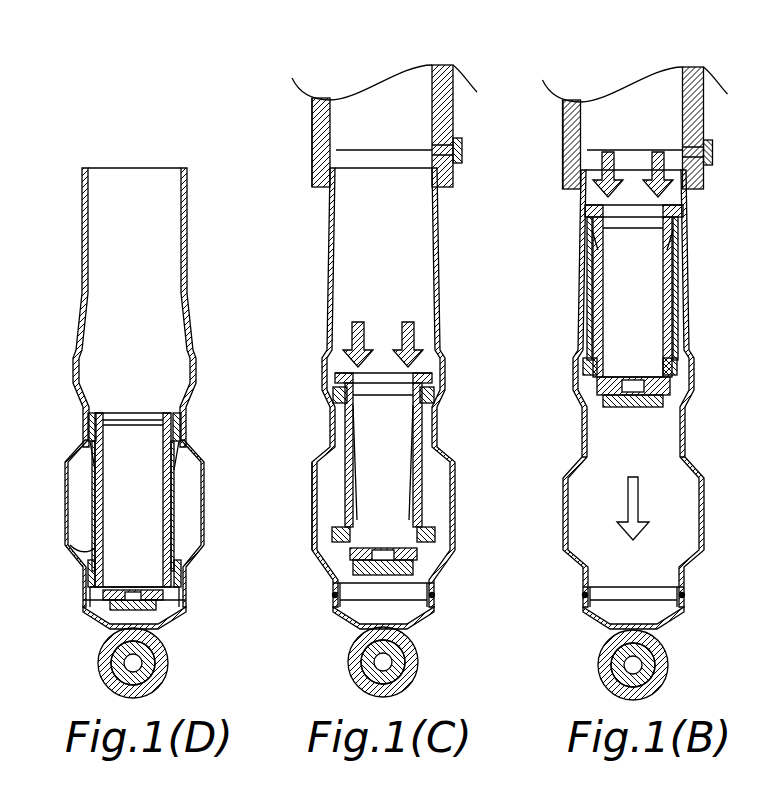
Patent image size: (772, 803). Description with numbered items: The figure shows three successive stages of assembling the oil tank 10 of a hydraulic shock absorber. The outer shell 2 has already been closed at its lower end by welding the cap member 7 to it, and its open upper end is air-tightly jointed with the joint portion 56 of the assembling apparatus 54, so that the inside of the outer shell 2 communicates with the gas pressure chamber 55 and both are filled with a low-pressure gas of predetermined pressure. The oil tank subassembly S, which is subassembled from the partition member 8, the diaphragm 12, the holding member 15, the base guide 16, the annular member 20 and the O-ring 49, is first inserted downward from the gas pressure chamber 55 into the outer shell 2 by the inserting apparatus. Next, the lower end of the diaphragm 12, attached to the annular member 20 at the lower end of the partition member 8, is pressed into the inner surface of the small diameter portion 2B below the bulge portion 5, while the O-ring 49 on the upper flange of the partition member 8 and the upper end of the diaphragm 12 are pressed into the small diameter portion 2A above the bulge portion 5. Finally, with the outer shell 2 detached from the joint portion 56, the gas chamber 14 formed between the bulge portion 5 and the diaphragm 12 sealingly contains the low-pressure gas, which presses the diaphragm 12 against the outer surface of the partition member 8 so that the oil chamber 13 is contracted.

In FIG. 1D, the outer shell 2 is at (187, 243).
In FIG. 1C, the outer shell 2 is at (437, 244).
In FIG. 1B, the outer shell 2 is at (690, 320).
In FIG. 1D, the small diameter portion 2A is at (190, 413).
In FIG. 1C, the small diameter portion 2A is at (446, 421).
In FIG. 1B, the small diameter portion 2A is at (688, 432).
In FIG. 1D, the small diameter portion 2B is at (188, 578).
In FIG. 1C, the small diameter portion 2B is at (450, 580).
In FIG. 1B, the small diameter portion 2B is at (690, 578).
In FIG. 1C, the bulge portion 5 is at (455, 500).
In FIG. 1B, the bulge portion 5 is at (705, 500).
In FIG. 1D, the cap member 7 is at (173, 618).
In FIG. 1C, the cap member 7 is at (425, 618).
In FIG. 1B, the cap member 7 is at (675, 618).
In FIG. 1D, the partition member 8 is at (95, 500).
In FIG. 1B, the partition member 8 is at (596, 285).
In FIG. 1D, the oil tank 10 is at (211, 505).
In FIG. 1D, the diaphragm 12 is at (170, 478).
In FIG. 1C, the diaphragm 12 is at (383, 474).
In FIG. 1B, the diaphragm 12 is at (678, 282).
In FIG. 1D, the oil chamber 13 is at (85, 550).
In FIG. 1D, the gas chamber 14 is at (190, 528).
In FIG. 1B, the holding member 15 is at (672, 405).
In FIG. 1B, the base guide 16 is at (672, 397).
In FIG. 1B, the annular member 20 is at (683, 374).
In FIG. 1B, the O-ring 49 is at (690, 217).
In FIG. 1C, the assembling apparatus 54 is at (452, 63).
In FIG. 1B, the assembling apparatus 54 is at (703, 63).
In FIG. 1C, the gas pressure chamber 55 is at (360, 100).
In FIG. 1B, the gas pressure chamber 55 is at (609, 107).
In FIG. 1C, the joint portion 56 is at (312, 133).
In FIG. 1B, the joint portion 56 is at (563, 133).
In FIG. 1D, the oil tank subassembly S is at (178, 462).
In FIG. 1C, the oil tank subassembly S is at (428, 461).
In FIG. 1B, the oil tank subassembly S is at (678, 255).